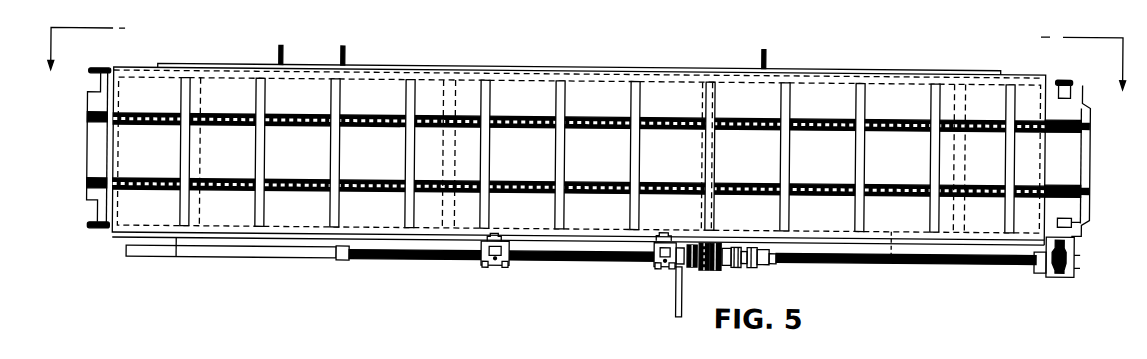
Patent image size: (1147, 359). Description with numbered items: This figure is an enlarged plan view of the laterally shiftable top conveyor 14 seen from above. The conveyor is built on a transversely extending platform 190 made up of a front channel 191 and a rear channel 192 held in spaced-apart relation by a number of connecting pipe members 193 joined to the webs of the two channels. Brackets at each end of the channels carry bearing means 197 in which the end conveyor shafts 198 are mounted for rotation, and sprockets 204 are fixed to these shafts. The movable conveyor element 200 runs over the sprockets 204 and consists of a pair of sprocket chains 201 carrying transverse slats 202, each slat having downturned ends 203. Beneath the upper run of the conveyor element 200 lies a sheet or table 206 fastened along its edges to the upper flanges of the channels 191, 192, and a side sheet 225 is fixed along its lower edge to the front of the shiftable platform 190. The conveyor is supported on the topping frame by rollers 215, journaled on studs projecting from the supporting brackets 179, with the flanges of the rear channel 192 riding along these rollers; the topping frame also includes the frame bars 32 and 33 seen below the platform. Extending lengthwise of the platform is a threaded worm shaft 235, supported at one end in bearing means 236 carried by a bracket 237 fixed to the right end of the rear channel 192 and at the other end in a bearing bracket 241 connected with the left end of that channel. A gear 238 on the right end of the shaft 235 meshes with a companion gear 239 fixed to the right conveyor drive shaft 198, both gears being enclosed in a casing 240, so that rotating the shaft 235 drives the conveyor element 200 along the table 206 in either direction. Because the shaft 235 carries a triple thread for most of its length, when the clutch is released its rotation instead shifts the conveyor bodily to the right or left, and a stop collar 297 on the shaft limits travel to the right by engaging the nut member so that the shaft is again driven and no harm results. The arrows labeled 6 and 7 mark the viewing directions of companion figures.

The top conveyor 14 is at (282, 63).
The section line 6 is at (582, 62).
The connecting pipe members 193 is at (203, 95).
The bearing means 197 is at (98, 75).
The sprockets 204 is at (87, 117).
The transverse slats 202 is at (330, 147).
The sprocket chains 201 is at (375, 125).
The side sheet 225 is at (518, 62).
The conveyor element 200 is at (584, 110).
The sheet 206 is at (745, 88).
The front channel 191 is at (897, 81).
The downturned ends 203 is at (1082, 84).
The end conveyor shafts 198 is at (1090, 211).
The bearing bracket 241 is at (177, 257).
The stop collar 297 is at (342, 258).
The frame bar 32 is at (478, 259).
The supporting brackets 179 is at (500, 258).
The worm shaft 235 is at (563, 256).
The shaft 7 is at (630, 260).
The frame bar 33 is at (685, 285).
The rollers 215 is at (503, 228).
The rear channel 192 is at (895, 263).
The platform 190 is at (978, 222).
The bearing means 236 is at (1040, 262).
The bracket 237 is at (1052, 269).
The gear 238 is at (1063, 266).
The companion gear 239 is at (1118, 278).
The casing 240 is at (1102, 286).